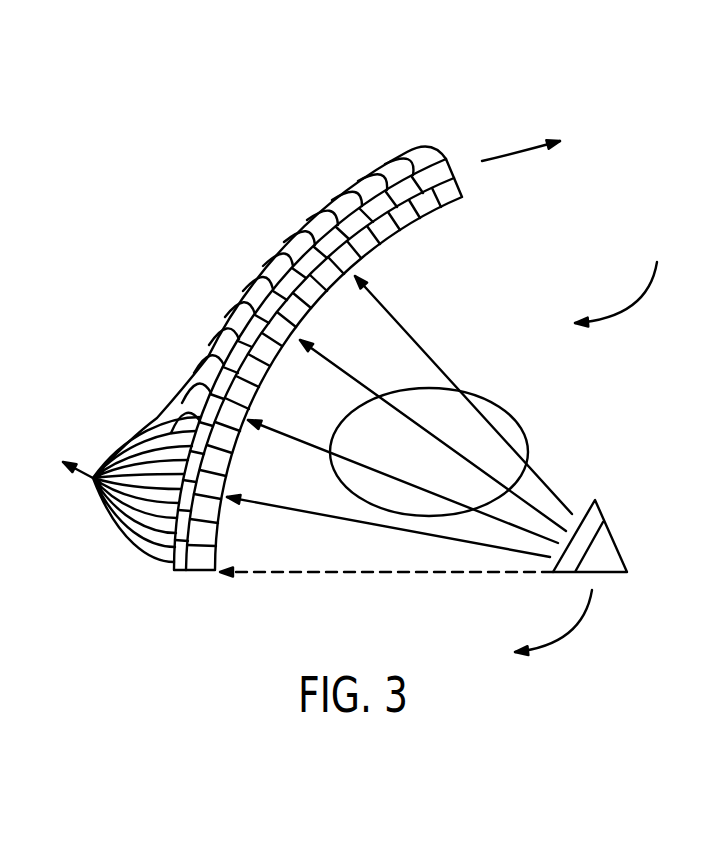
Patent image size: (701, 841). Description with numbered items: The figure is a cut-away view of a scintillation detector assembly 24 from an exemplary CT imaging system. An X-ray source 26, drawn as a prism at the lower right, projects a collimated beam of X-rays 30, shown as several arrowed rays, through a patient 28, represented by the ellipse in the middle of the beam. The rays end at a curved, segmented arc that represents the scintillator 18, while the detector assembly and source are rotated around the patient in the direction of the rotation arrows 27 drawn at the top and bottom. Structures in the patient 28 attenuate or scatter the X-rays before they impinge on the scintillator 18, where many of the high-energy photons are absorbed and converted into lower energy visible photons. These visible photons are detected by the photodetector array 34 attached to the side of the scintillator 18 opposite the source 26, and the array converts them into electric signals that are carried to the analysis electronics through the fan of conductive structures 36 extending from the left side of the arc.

The scintillator 18 is at (460, 182).
The scintillation detector assembly 24 is at (627, 275).
The X-ray source 26 is at (617, 545).
The rotation 27 is at (515, 148).
The patient 28 is at (515, 418).
The beam of X-rays 30 is at (411, 333).
The photodetector array 34 is at (455, 163).
The conductive structures 36 is at (84, 470).